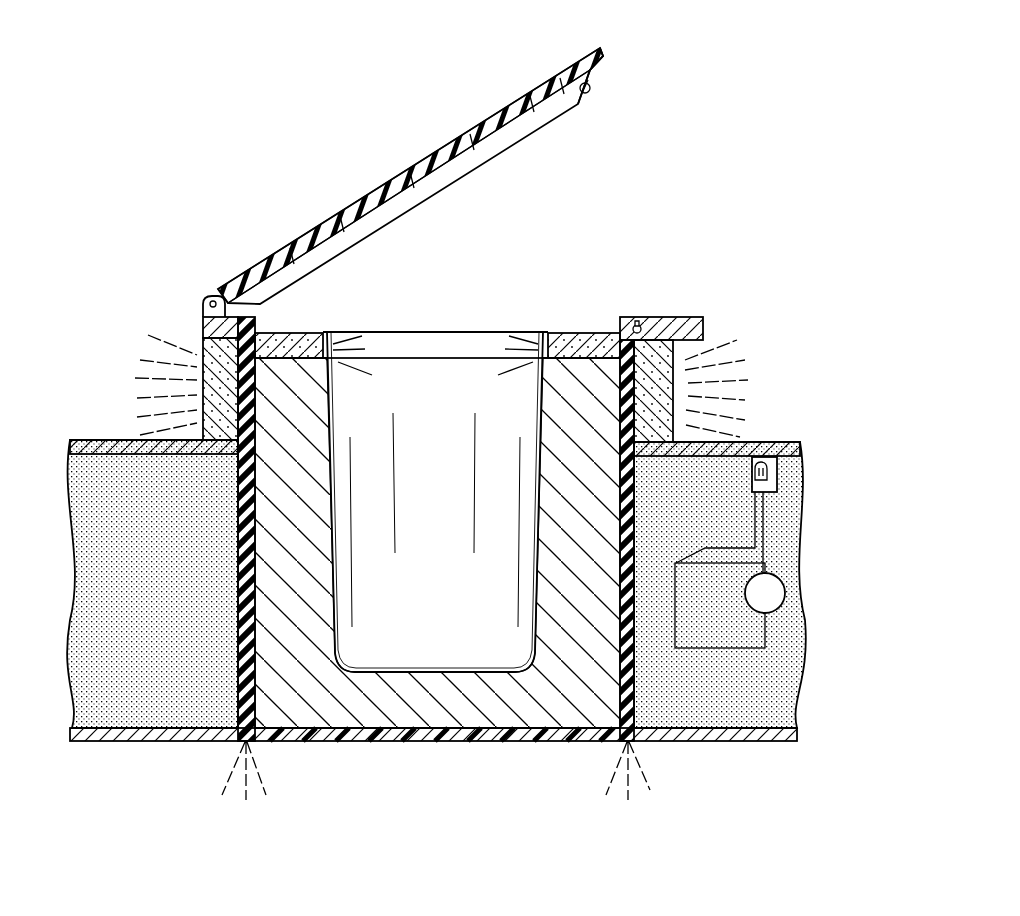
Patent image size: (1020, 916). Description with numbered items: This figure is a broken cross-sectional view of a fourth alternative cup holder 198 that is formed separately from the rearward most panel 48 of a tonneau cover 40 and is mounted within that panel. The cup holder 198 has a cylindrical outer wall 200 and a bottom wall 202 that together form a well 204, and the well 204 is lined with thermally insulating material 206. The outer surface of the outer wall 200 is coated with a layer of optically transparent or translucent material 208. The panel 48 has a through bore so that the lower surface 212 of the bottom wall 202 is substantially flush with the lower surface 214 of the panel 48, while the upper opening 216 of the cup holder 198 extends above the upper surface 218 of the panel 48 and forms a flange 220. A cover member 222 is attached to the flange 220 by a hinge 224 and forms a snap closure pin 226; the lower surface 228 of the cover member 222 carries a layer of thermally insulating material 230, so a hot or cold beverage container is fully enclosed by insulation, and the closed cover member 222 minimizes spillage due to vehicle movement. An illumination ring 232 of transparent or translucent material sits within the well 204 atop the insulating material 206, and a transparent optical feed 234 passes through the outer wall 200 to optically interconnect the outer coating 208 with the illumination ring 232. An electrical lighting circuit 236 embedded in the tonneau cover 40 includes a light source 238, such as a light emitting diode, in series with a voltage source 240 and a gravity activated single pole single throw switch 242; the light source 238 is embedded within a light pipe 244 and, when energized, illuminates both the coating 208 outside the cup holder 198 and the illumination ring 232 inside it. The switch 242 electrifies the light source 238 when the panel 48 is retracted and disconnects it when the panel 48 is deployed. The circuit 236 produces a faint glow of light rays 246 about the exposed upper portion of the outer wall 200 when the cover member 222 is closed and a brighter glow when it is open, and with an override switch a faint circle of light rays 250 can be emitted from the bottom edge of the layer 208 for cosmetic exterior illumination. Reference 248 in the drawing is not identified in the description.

The tonneau cover 40 is at (145, 200).
The rearward most panel 48 is at (110, 428).
The cup holder 198 is at (624, 290).
The outer wall 200 is at (240, 660).
The bottom wall 202 is at (398, 742).
The well 204 is at (448, 519).
The thermally insulating material 206 is at (598, 573).
The optically transparent or translucent material 208 is at (238, 540).
The lower surface of the bottom wall 212 is at (493, 742).
The lower surface of the rearward most panel 214 is at (115, 742).
The upper opening 216 is at (617, 327).
The upper surface of the rearward most panel 218 is at (768, 445).
The flange 220 is at (685, 318).
The cover member 222 is at (520, 100).
The hinge 224 is at (200, 312).
The snap closure pin 226 is at (598, 92).
The lower surface of the cover member 228 is at (240, 282).
The thermally insulating material 230 is at (425, 195).
The illumination ring 232 is at (308, 338).
The transparent optical feed 234 is at (620, 350).
The electrical lighting circuit 236 is at (729, 660).
The light source 238 is at (777, 473).
The voltage source 240 is at (785, 590).
The gravity activated single pole single throw switch 242 is at (688, 562).
The light pipe 244 is at (752, 475).
The light rays 246 is at (175, 342).
The reflection lines 248 is at (375, 335).
The light rays 250 is at (235, 770).